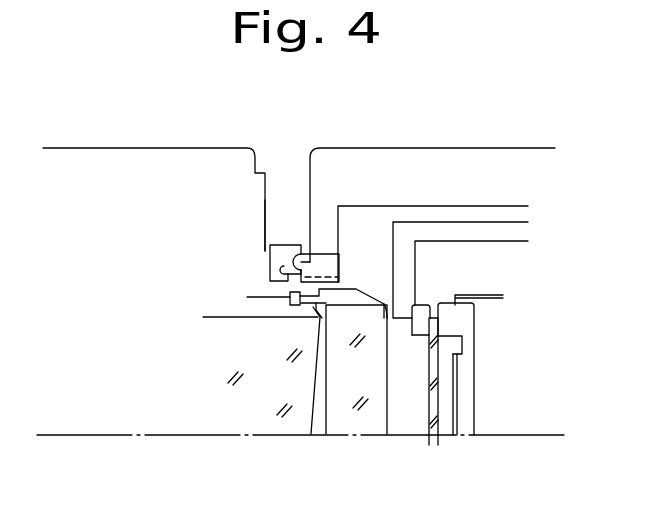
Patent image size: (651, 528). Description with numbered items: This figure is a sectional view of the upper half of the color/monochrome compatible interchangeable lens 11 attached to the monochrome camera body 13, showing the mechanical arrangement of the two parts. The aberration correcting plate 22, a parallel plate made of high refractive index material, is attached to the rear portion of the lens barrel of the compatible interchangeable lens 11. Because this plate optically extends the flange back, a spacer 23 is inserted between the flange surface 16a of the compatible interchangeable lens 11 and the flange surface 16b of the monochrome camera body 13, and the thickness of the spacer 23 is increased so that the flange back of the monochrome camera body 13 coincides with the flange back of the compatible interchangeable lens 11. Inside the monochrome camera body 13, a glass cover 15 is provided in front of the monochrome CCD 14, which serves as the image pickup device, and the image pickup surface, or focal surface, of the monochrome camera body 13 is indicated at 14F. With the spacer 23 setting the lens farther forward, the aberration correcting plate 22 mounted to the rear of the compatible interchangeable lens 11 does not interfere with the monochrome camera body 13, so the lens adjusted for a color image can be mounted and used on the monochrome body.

The compatible interchangeable lens 11 is at (146, 161).
The monochrome camera body 13 is at (496, 153).
The spacer 23 is at (291, 250).
The flange surface of the compatible interchangeable lens 16a is at (272, 262).
The flange surface of the monochrome camera body 16b is at (311, 260).
The aberration correcting plate 22 is at (358, 432).
The monochrome CCD 14 is at (470, 406).
The image pickup surface 14F is at (456, 437).
The glass cover 15 is at (433, 437).